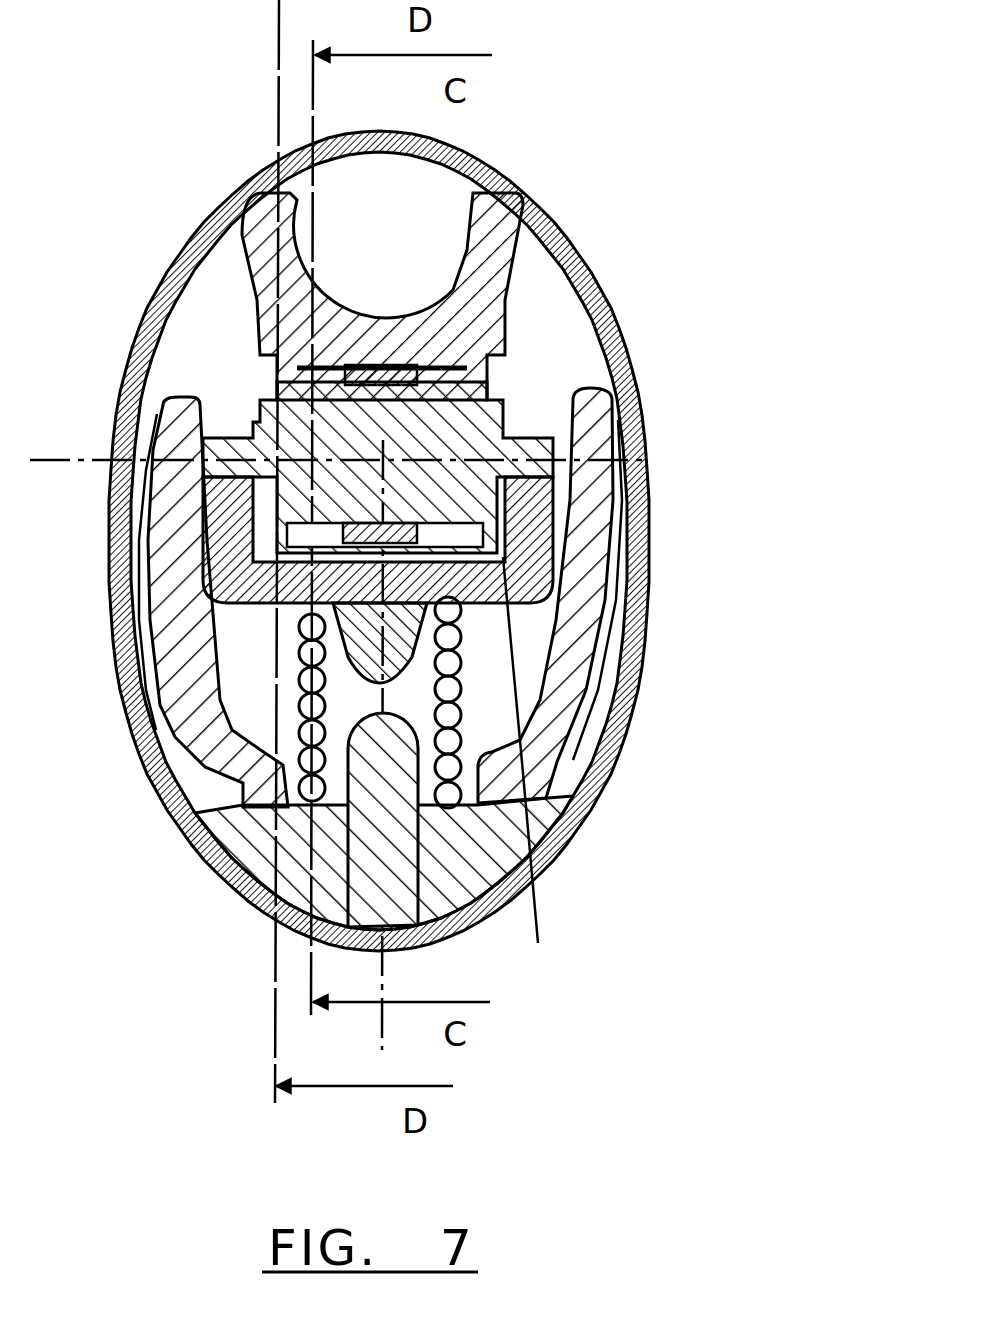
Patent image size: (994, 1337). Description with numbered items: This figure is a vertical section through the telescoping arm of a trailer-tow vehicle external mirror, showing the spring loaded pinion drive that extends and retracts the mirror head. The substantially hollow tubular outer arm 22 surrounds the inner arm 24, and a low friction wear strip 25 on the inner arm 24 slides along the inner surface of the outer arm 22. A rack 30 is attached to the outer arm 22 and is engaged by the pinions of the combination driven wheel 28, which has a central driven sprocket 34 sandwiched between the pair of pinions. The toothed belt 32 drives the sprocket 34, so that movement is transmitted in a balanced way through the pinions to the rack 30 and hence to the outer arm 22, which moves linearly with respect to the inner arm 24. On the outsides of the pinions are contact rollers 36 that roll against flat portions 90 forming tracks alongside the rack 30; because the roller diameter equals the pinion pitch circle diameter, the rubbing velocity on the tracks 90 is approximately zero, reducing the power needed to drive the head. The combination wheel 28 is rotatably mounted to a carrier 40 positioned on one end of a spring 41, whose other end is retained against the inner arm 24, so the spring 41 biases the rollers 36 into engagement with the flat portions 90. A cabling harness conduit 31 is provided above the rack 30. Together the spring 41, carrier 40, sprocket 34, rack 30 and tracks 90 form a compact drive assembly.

The outer arm 22 is at (602, 302).
The inner arm 24 is at (205, 708).
The wear strip 25 is at (300, 892).
The combination driven wheel 28 is at (543, 403).
The rack 30 is at (517, 277).
The cabling harness conduit 31 is at (385, 215).
The toothed belt 32 is at (345, 382).
The central driven sprocket 34 is at (500, 552).
The contact roller 36 is at (263, 350).
The carrier 40 is at (535, 510).
The spring 41 is at (467, 730).
The flat portion 90 is at (538, 943).